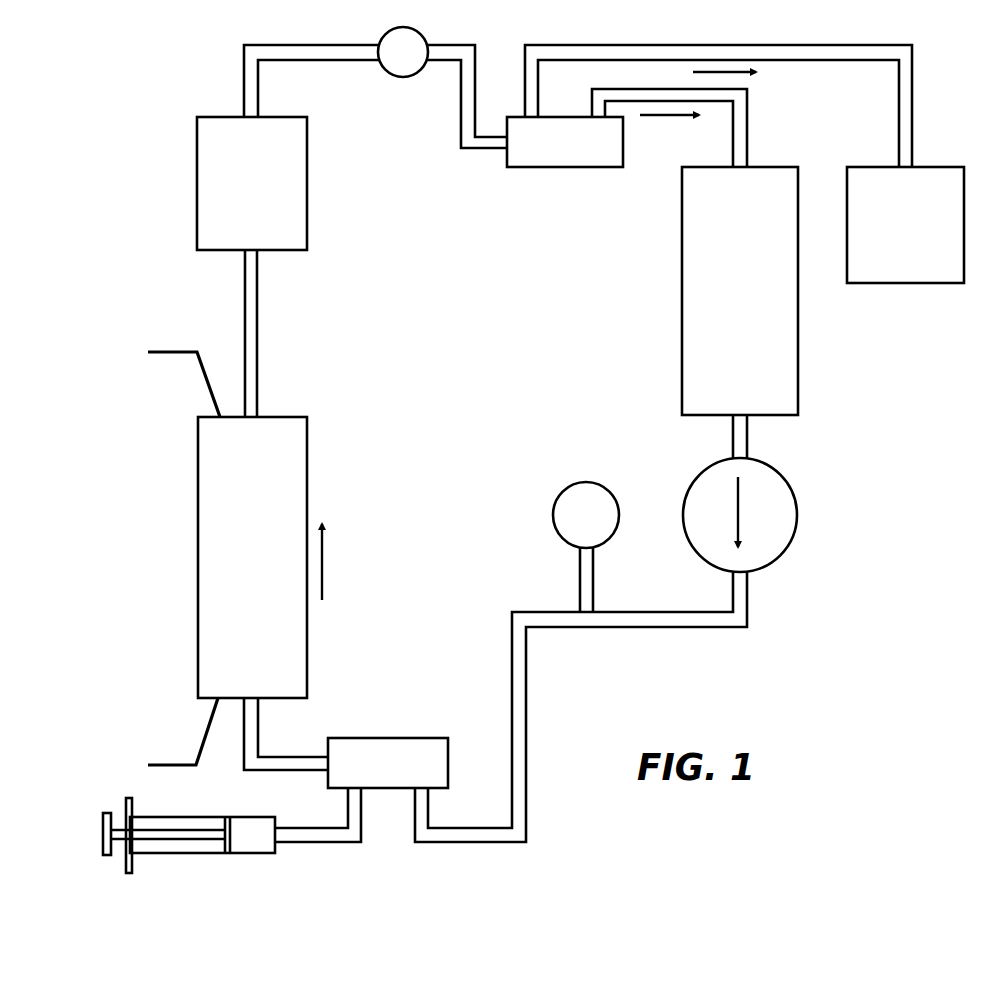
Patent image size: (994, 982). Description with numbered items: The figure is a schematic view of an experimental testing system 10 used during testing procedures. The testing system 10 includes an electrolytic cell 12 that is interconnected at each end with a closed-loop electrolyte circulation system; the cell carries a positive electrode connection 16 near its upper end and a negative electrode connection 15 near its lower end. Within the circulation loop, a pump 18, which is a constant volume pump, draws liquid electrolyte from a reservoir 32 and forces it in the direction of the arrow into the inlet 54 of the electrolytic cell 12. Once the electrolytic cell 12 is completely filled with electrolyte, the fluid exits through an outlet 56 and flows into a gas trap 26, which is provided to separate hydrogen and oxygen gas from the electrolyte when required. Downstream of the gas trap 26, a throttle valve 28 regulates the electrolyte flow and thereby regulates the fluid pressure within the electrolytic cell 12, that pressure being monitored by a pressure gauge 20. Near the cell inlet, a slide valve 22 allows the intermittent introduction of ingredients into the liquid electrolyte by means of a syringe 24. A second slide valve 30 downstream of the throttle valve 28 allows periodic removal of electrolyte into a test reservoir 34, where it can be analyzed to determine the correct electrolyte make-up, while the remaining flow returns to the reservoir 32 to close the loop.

The testing system 10 is at (150, 117).
The electrolytic cell 12 is at (314, 480).
The cathode (negative electrode) 15 is at (181, 765).
The anode (positive electrode) 16 is at (173, 352).
The pump 18 is at (788, 473).
The pressure gauge 20 is at (577, 484).
The slide valve 22 is at (371, 738).
The syringe 24 is at (200, 853).
The gas trap 26 is at (283, 117).
The throttle valve 28 is at (402, 78).
The second slide valve 30 is at (556, 167).
The reservoir 32 is at (772, 167).
The test reservoir 34 is at (935, 167).
The inlet 54 is at (252, 698).
The outlet 56 is at (252, 417).